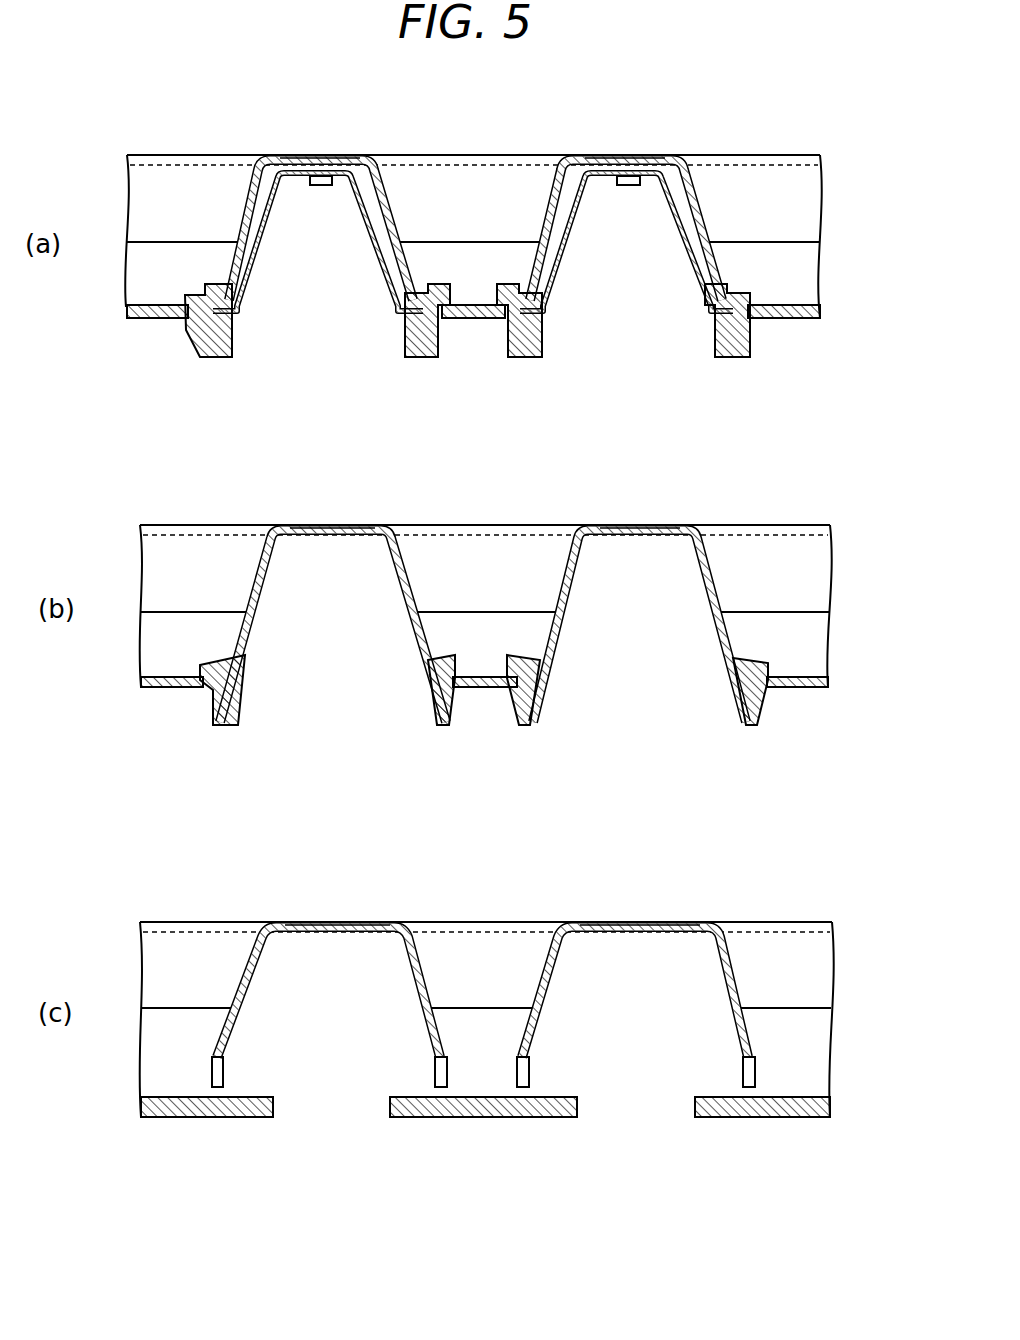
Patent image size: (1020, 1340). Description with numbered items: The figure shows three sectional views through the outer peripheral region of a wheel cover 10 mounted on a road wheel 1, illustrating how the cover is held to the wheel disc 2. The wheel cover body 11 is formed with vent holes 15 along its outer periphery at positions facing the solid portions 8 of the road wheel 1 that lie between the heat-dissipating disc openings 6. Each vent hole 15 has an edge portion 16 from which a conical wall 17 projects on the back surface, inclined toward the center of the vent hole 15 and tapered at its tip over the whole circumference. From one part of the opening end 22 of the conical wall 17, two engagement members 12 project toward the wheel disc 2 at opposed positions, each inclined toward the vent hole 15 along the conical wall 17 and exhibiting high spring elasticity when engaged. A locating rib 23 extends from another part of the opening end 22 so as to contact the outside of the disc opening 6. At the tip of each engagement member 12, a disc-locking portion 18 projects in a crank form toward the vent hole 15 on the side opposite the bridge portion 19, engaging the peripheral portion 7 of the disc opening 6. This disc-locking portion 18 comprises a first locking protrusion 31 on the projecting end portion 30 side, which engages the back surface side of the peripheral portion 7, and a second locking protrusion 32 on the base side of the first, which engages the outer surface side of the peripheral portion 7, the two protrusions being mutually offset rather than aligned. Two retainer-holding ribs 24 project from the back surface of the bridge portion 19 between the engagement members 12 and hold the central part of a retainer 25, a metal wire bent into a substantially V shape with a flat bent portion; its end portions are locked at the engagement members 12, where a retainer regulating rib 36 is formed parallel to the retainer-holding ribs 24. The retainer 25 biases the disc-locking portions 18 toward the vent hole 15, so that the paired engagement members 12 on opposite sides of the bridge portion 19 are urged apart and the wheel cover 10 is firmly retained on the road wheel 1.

The road wheel 1 is at (140, 305).
The wheel disc 2 is at (150, 320).
The disc opening 6 is at (320, 310).
The peripheral portion 7 is at (187, 322).
The solid portion 8 is at (430, 325).
The wheel cover 10 is at (335, 158).
The wheel cover body 11 is at (173, 155).
The engagement member 12 is at (400, 245).
The vent hole 15 is at (498, 170).
The edge portion 16 is at (258, 165).
The conical wall 17 is at (385, 185).
The disc-locking portion 18 is at (205, 290).
The bridge portion 19 is at (296, 158).
The opening end 22 is at (130, 219).
The locating rib 23 is at (435, 1070).
The retainer-holding rib 24 is at (632, 187).
The retainer 25 is at (263, 233).
The projecting end portion 30 is at (516, 345).
The first locking protrusion 31 is at (483, 325).
The second locking protrusion 32 is at (492, 290).
The retainer regulating rib 36 is at (232, 350).